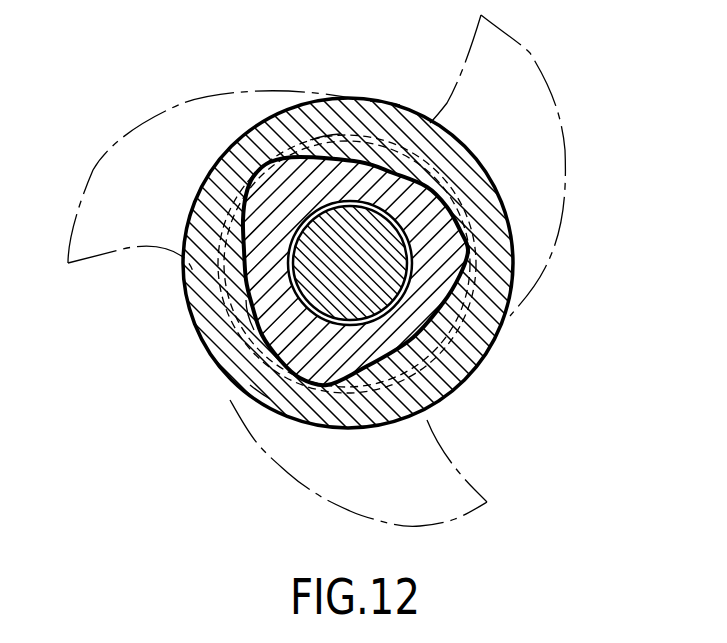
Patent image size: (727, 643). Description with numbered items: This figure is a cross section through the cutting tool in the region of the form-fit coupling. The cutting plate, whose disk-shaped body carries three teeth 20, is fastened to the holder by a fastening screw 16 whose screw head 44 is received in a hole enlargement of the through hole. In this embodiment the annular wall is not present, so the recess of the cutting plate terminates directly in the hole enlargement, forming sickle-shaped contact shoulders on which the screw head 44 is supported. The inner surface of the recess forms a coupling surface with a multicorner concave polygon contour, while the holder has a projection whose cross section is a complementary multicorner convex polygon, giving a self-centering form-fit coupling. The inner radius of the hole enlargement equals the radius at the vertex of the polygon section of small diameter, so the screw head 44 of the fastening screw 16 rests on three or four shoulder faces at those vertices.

The teeth 20 is at (523, 47).
The fastening screw 16 is at (377, 277).
The screw head 44 is at (315, 141).